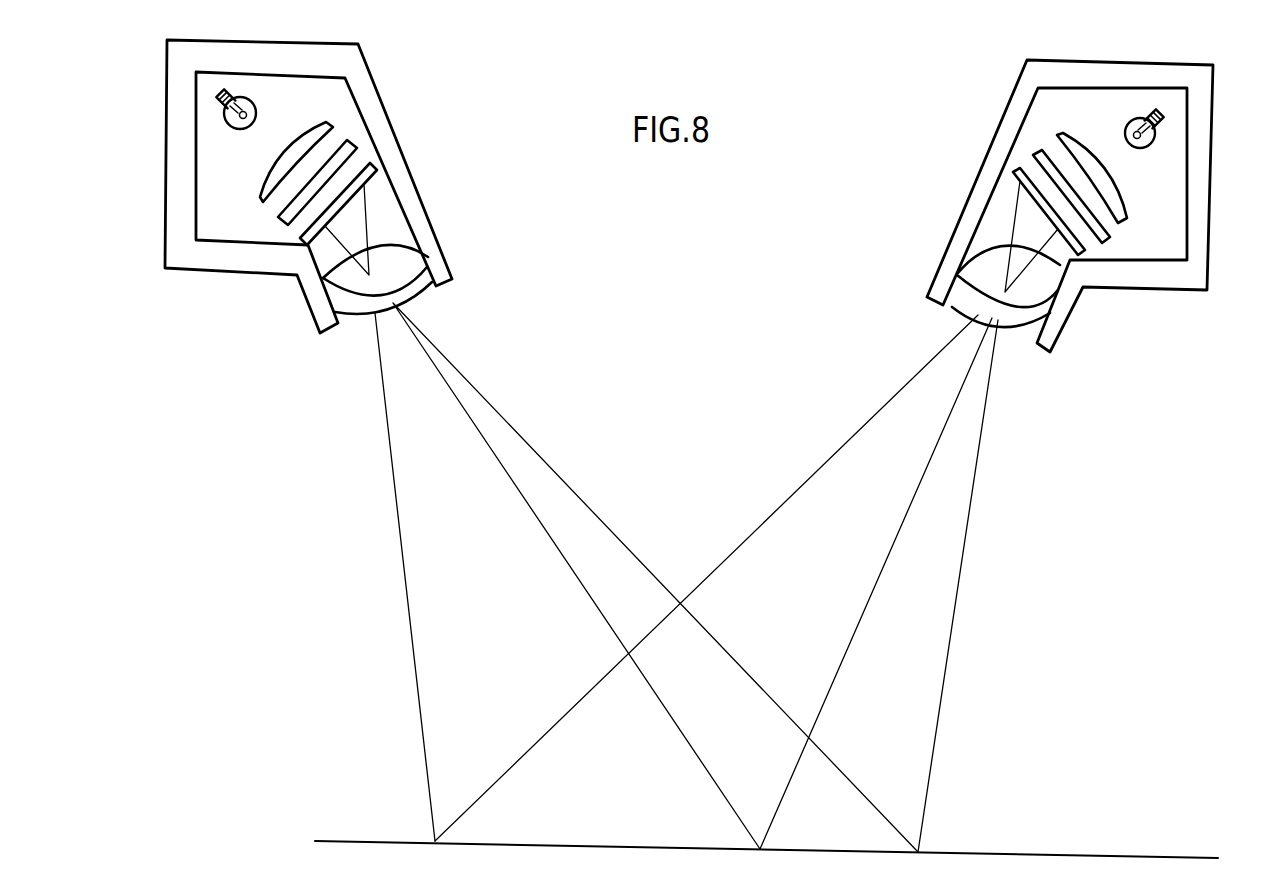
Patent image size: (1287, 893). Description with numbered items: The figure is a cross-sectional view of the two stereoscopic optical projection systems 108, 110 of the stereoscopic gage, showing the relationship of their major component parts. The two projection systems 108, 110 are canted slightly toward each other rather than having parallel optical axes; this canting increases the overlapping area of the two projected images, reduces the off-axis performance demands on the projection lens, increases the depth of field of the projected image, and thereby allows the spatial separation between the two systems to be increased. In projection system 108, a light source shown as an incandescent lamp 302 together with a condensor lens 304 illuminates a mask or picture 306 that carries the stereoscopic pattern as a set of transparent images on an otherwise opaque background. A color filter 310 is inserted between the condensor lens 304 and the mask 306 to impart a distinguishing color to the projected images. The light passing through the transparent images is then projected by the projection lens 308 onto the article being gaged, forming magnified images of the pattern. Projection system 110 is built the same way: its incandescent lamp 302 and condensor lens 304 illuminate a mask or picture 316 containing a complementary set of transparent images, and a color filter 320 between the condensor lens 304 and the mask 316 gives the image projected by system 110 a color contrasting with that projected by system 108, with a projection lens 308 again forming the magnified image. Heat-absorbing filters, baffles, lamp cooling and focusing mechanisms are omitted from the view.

The stereoscopic optical projection system 108 is at (328, 56).
The stereoscopic optical projection system 110 is at (1137, 63).
The incandescent lamp 302 is at (257, 108).
The condensor lens 304 is at (262, 203).
The mask or picture 306 is at (373, 172).
The projection lens 308 is at (404, 257).
The color filter 310 is at (349, 143).
The mask or picture 316 is at (1013, 176).
The color filter 320 is at (1105, 238).